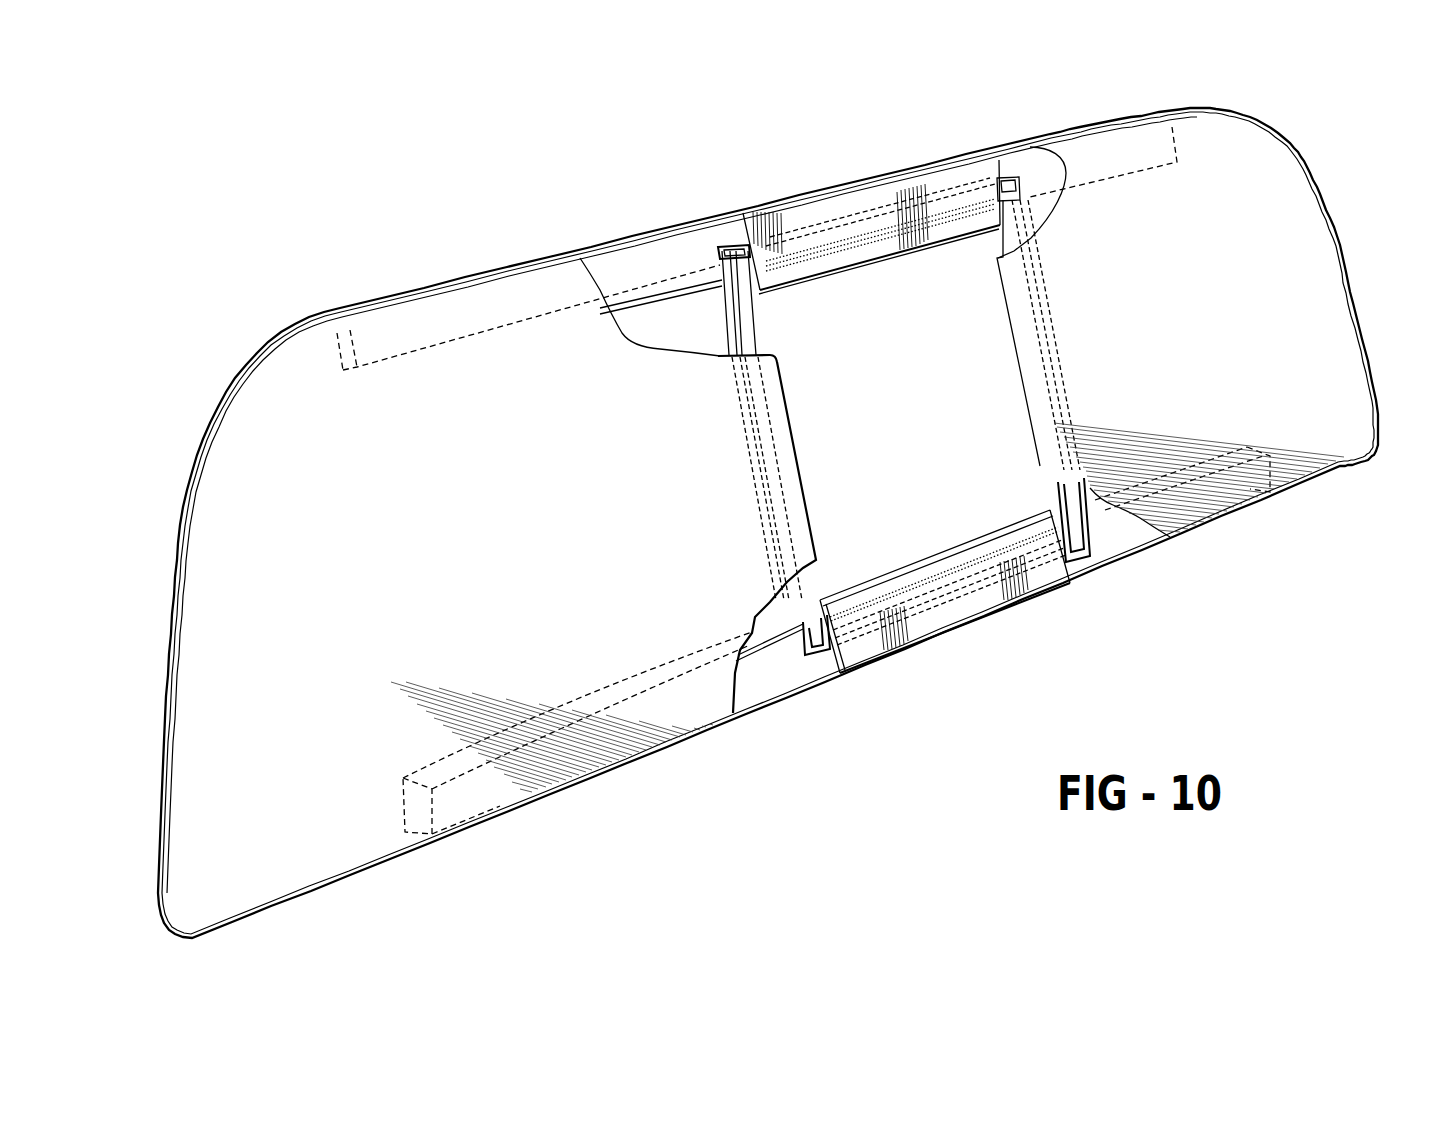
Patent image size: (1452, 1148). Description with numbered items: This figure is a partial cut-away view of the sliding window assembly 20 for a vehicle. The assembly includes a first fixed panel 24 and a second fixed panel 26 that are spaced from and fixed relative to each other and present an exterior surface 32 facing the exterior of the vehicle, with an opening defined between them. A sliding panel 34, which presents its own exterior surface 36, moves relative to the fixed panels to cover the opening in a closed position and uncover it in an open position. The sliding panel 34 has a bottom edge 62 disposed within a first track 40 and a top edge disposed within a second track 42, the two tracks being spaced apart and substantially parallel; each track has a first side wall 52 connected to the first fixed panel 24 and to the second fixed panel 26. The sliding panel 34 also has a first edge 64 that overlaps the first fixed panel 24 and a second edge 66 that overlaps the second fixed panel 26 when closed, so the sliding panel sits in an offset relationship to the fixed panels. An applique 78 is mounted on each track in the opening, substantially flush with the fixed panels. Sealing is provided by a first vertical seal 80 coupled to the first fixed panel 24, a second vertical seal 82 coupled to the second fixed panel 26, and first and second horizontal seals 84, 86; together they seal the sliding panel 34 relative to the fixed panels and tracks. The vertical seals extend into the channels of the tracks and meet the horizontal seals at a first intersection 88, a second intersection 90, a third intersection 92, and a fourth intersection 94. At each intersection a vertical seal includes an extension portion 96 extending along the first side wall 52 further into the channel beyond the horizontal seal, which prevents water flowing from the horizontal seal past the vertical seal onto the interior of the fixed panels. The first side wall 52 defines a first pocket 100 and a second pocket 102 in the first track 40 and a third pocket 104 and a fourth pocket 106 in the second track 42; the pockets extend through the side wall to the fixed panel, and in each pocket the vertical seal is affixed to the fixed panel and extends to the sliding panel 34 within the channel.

The sliding window assembly 20 is at (975, 112).
The first fixed panel 24 is at (1263, 158).
The second fixed panel 26 is at (305, 350).
The exterior surface 32 is at (256, 448).
The sliding panel 34 is at (932, 482).
The exterior surface 36 is at (934, 253).
The first track 40 is at (740, 703).
The second track 42 is at (612, 252).
The first side wall 52 is at (640, 262).
The bottom edge 62 is at (905, 622).
The first edge 64 is at (810, 233).
The second edge 66 is at (722, 303).
The applique 78 is at (848, 200).
The first vertical seal 80 is at (1060, 360).
The second vertical seal 82 is at (752, 470).
The first horizontal seal 84 is at (907, 565).
The second horizontal seal 86 is at (962, 235).
The first intersection 88 is at (1085, 525).
The second intersection 90 is at (802, 608).
The third intersection 92 is at (1025, 215).
The fourth intersection 94 is at (733, 285).
The extension portion 96 is at (742, 252).
The first pocket 100 is at (1070, 565).
The second pocket 102 is at (805, 656).
The third pocket 104 is at (1000, 177).
The fourth pocket 106 is at (727, 250).